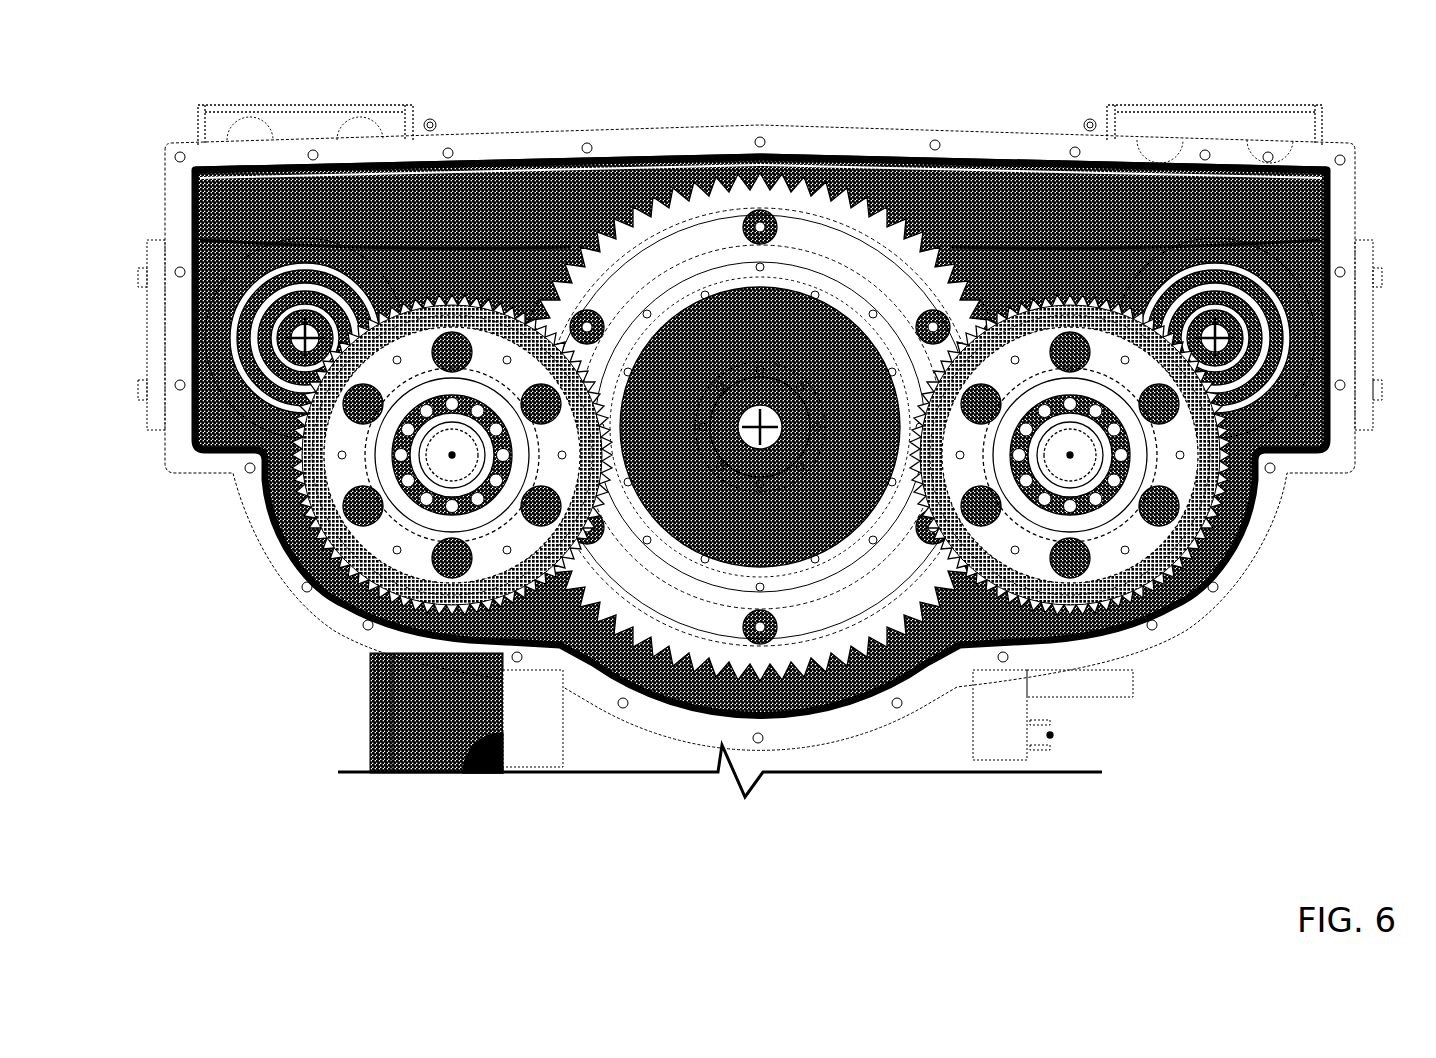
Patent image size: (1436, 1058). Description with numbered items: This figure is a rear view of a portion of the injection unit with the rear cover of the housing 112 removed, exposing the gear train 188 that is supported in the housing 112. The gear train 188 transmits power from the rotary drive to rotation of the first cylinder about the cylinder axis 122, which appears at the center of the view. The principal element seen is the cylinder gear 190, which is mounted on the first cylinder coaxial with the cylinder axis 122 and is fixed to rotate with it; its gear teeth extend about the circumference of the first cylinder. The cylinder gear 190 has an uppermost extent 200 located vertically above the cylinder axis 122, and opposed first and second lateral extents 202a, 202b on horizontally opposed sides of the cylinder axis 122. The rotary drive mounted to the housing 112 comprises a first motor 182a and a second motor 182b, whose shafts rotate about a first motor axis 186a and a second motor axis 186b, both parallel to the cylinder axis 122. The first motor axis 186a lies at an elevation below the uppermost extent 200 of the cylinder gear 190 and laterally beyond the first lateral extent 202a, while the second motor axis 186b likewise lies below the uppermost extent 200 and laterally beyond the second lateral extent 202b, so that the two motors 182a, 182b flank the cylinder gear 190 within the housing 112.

The housing 112 is at (845, 66).
The cylinder axis 122 is at (754, 418).
The first motor 182a is at (245, 105).
The second motor 182b is at (1275, 105).
The first motor axis 186a is at (298, 328).
The second motor axis 186b is at (1222, 328).
The gear train 188 is at (258, 208).
The cylinder gear 190 is at (868, 211).
The uppermost extent 200 is at (756, 156).
The first lateral extent 202a is at (492, 434).
The second lateral extent 202b is at (1030, 434).